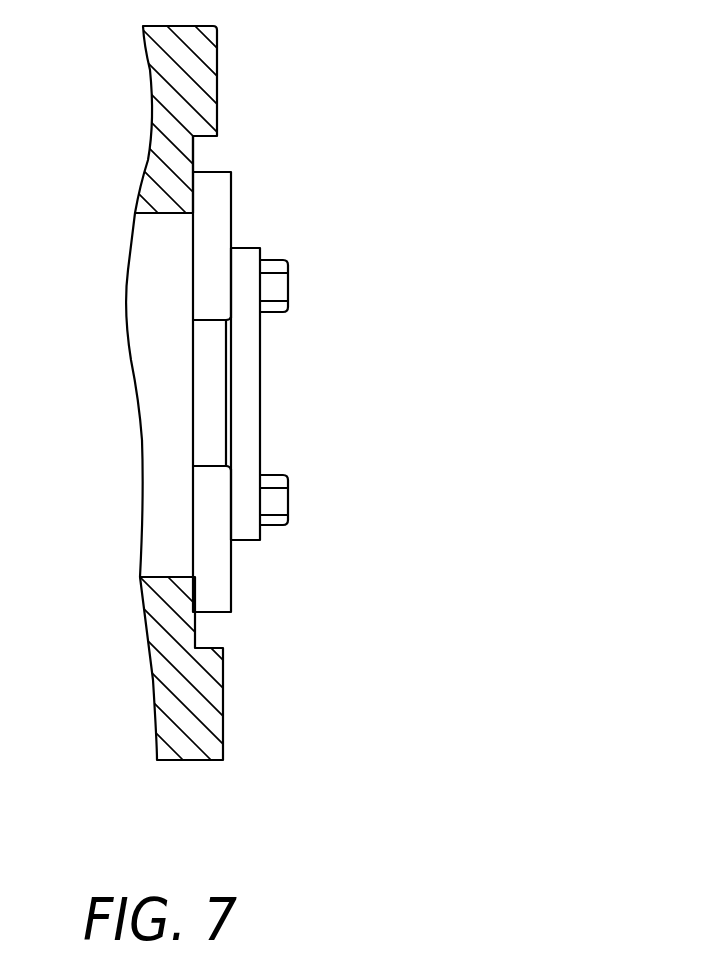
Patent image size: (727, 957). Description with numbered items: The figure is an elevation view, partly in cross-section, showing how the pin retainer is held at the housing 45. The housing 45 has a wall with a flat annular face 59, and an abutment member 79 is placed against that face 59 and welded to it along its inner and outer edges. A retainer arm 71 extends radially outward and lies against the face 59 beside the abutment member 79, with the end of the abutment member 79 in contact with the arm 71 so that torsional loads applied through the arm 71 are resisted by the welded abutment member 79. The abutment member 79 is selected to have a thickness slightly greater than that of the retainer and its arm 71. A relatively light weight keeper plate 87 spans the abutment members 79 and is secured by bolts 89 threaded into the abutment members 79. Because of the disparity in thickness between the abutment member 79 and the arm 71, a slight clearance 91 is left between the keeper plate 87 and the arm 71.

The housing 45 is at (205, 65).
The flat annular face 59 is at (193, 155).
The abutment member 79 is at (223, 383).
The retainer arm 71 is at (212, 407).
The keeper plate 87 is at (247, 346).
The bolt 89 is at (288, 273).
The clearance 91 is at (230, 431).